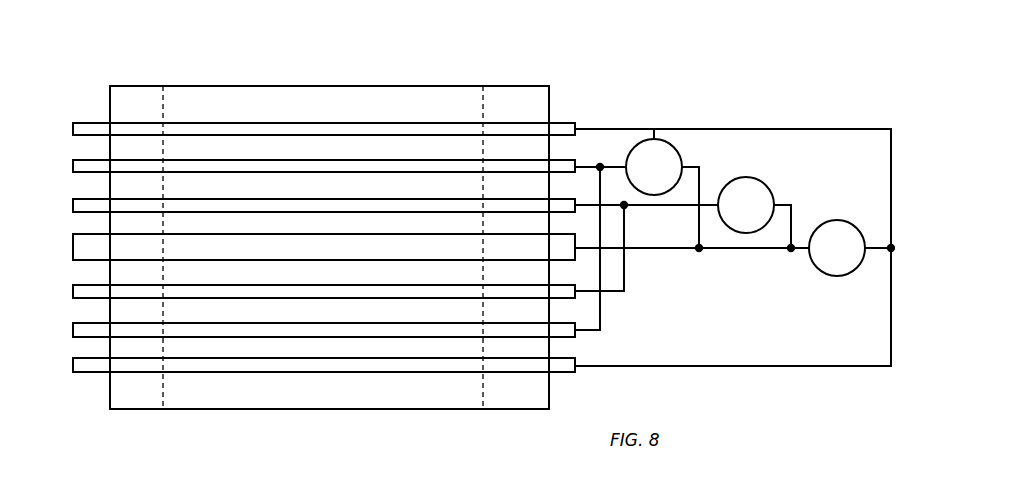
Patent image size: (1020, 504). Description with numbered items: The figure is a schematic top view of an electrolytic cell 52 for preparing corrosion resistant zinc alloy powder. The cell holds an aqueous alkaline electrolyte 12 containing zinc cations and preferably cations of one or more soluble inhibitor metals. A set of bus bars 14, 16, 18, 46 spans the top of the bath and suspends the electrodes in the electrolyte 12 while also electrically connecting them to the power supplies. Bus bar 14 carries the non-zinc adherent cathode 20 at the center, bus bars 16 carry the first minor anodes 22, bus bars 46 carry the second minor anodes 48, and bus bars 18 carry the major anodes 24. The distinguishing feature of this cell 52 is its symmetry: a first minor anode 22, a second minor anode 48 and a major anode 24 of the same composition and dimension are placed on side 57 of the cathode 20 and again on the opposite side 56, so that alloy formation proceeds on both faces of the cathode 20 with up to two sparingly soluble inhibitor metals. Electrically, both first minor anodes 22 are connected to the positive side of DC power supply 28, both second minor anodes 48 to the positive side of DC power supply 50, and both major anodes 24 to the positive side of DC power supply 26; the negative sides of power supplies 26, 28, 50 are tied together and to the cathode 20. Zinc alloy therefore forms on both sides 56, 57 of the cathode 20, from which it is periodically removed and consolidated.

The electrolytic cell 52 is at (307, 52).
The aqueous alkaline electrolyte 12 is at (125, 150).
The bus bar 18 is at (93, 123).
The bus bar 46 is at (73, 166).
The bus bar 16 is at (73, 206).
The bus bar 14 is at (73, 248).
The major anode 24 is at (363, 141).
The first minor anode 22 is at (258, 214).
The side of cathode 57 is at (340, 235).
The opposite side of cathode 56 is at (240, 261).
The non-zinc adherent cathode 20 is at (445, 262).
The second minor anode 48 is at (460, 160).
The DC power supply 50 is at (658, 129).
The DC power supply 28 is at (767, 184).
The DC power supply 26 is at (836, 220).